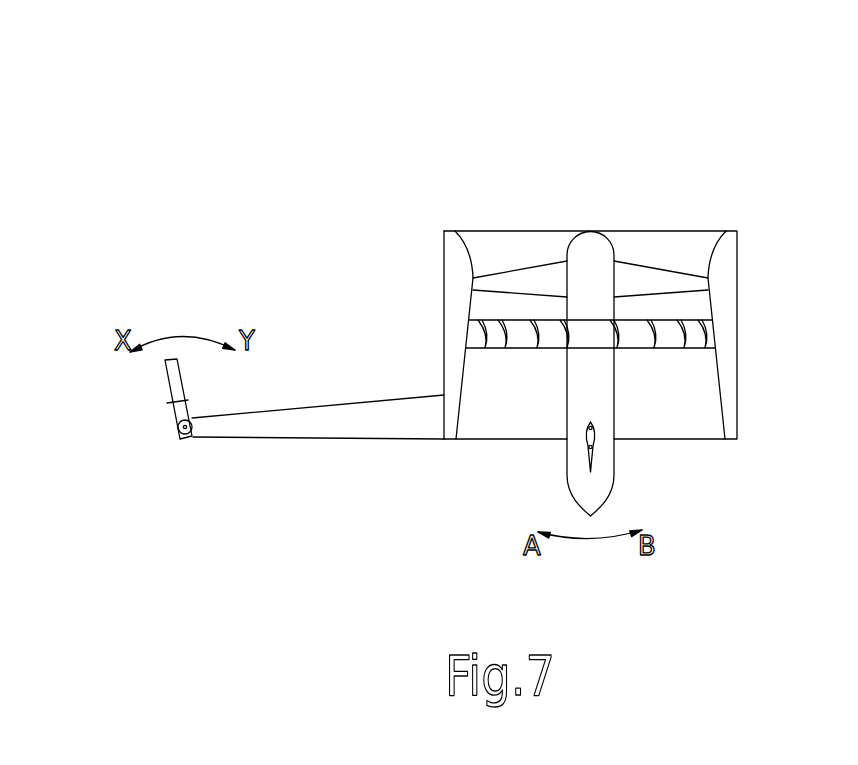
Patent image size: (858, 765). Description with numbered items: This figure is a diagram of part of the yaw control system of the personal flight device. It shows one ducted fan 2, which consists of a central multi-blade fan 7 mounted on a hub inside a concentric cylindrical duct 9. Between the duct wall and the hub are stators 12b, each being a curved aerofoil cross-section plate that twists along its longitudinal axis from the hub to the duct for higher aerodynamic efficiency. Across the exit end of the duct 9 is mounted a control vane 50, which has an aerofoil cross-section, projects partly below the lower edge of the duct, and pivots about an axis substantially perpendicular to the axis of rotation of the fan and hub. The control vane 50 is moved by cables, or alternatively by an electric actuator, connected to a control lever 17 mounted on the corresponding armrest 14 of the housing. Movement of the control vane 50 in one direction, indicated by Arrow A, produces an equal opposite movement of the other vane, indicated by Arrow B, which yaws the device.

The ducted fan 2 is at (603, 277).
The central multi-blade fan 7 is at (675, 264).
The cylindrical duct 9 is at (441, 247).
The stator 12b is at (700, 349).
The armrest 14 is at (311, 391).
The control lever 17 is at (153, 381).
The control vane 50 is at (611, 455).